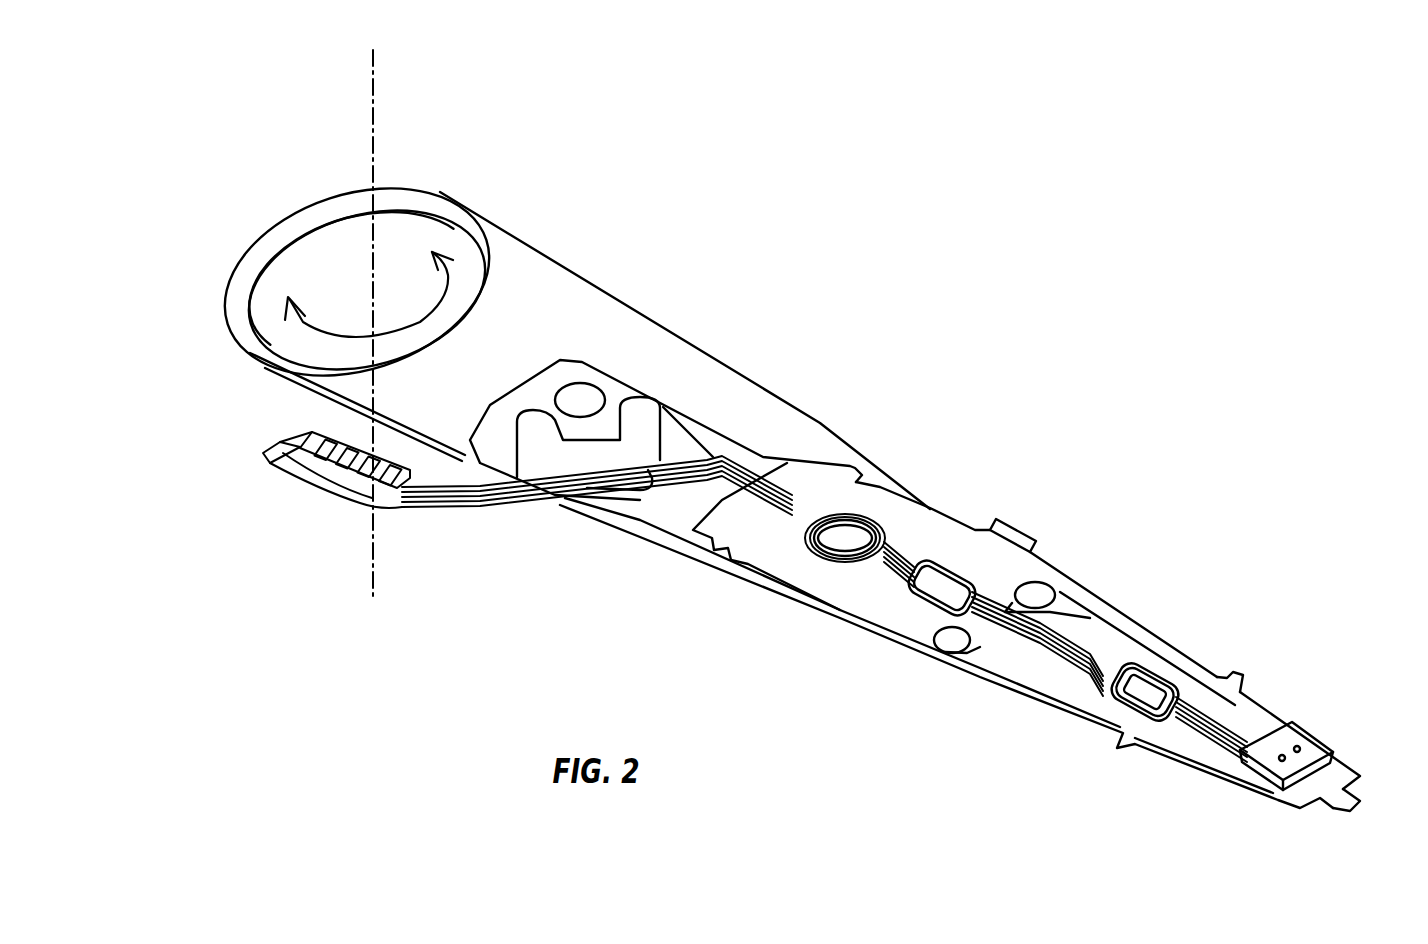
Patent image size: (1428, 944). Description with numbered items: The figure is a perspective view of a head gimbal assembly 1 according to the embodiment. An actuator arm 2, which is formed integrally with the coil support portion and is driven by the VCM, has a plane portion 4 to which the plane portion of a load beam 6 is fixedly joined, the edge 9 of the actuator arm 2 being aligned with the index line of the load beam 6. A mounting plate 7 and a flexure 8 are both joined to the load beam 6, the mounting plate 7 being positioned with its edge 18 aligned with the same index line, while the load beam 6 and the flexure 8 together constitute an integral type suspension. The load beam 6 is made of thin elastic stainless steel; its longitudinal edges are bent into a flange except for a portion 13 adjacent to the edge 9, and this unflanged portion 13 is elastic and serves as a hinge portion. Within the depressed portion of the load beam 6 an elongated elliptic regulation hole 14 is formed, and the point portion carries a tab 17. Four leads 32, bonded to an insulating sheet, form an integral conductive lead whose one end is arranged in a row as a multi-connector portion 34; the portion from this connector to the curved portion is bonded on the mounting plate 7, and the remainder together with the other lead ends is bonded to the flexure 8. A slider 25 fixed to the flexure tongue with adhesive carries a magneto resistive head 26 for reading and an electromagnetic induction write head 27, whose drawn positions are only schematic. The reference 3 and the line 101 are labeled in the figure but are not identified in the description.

The head gimbal assembly 1 is at (1086, 424).
The actuator arm 2 is at (712, 392).
The pivot hub 3 is at (478, 270).
The plane portion 4 is at (653, 350).
The load beam 6 is at (907, 633).
The mounting plate 7 is at (930, 510).
The flexure 8 is at (1090, 617).
The edge 9 is at (838, 620).
The hinge portion 13 is at (1017, 530).
The elongated elliptic regulation hole 14 is at (1190, 672).
The tab 17 is at (1337, 813).
The edge 18 is at (950, 550).
The slider 25 is at (1267, 742).
The magneto resistive head 26 is at (1282, 760).
The electromagnetic induction write head 27 is at (1300, 742).
The lead 32 is at (1100, 657).
The multi-connector portion 34 is at (265, 456).
The pivot axis 101 is at (376, 106).